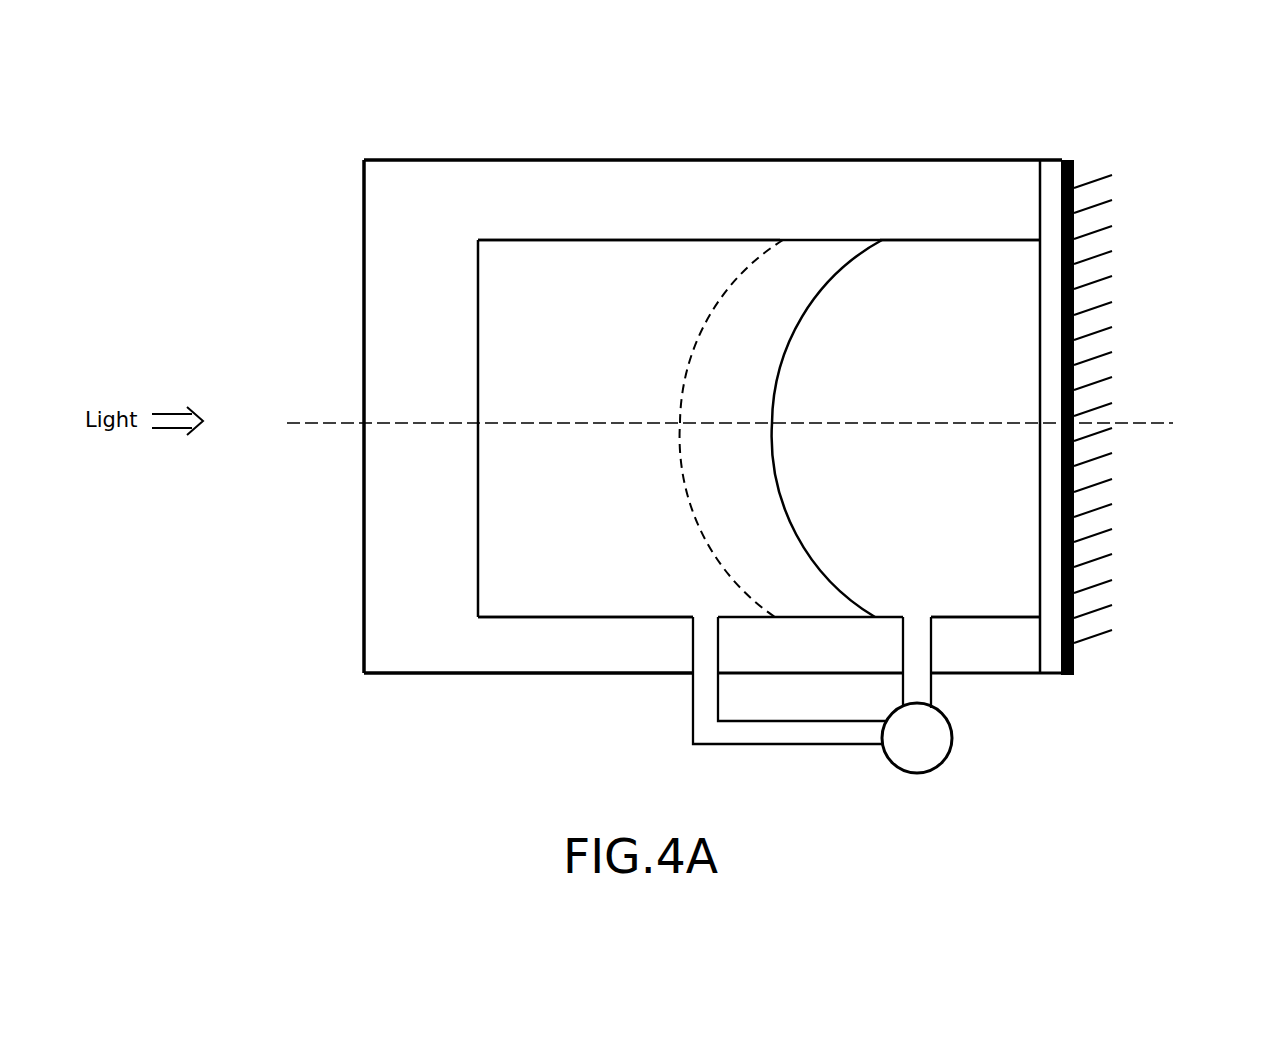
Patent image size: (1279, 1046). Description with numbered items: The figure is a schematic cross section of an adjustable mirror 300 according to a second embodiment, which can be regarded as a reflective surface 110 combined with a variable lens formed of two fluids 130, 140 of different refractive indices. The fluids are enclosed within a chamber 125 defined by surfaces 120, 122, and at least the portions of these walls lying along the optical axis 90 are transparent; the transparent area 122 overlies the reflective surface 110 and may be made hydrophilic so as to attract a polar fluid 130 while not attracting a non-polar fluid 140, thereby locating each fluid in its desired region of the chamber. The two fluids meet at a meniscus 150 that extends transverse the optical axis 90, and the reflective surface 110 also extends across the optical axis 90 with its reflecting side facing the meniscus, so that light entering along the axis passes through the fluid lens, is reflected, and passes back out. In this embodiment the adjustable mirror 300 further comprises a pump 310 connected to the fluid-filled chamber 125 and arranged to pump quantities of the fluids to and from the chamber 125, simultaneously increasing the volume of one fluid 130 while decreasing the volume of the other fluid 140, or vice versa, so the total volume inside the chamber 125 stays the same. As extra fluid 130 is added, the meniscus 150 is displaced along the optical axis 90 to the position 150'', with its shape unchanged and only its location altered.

The optical axis 90 is at (1148, 428).
The reflective surface 110 is at (1075, 152).
The surface 120 is at (626, 240).
The transparent area 122 is at (1040, 607).
The chamber 125 is at (503, 338).
The fluid 130 is at (940, 270).
The fluid 140 is at (512, 250).
The meniscus 150 is at (827, 360).
The meniscus position 150'' is at (731, 360).
The adjustable mirror 300 is at (1136, 681).
The pump 310 is at (927, 747).